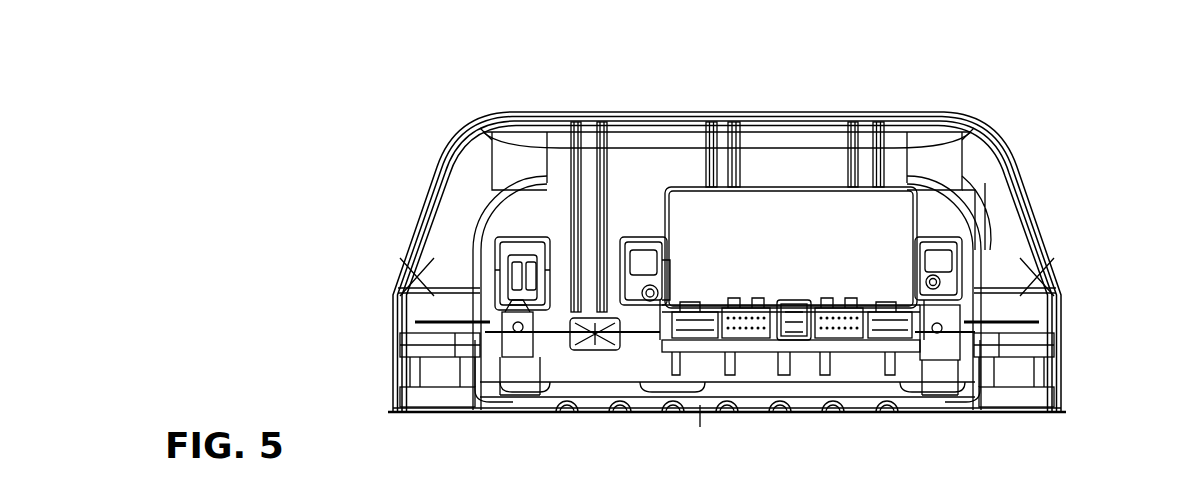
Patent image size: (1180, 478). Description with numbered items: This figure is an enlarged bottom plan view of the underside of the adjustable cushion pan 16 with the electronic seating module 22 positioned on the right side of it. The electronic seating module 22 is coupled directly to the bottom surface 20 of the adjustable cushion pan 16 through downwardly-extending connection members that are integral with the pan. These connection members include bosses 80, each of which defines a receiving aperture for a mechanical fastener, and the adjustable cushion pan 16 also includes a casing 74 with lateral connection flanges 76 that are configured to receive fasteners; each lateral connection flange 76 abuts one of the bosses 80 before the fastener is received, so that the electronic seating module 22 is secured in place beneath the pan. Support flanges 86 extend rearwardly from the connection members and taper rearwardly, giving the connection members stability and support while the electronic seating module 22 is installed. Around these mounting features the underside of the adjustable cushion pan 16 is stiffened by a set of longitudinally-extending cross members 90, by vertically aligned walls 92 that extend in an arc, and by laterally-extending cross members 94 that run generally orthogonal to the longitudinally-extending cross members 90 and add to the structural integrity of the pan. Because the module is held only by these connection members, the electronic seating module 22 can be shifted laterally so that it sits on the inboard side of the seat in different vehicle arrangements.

The adjustable cushion pan 16 is at (805, 165).
The bottom surface 20 is at (633, 183).
The electronic seating module 22 is at (738, 241).
The casing 74 is at (937, 212).
The lateral connection flanges 76 is at (632, 268).
The bosses 80 is at (505, 265).
The support flanges 86 is at (537, 358).
The longitudinally-extending cross members 90 is at (575, 200).
The vertically aligned walls 92 is at (432, 167).
The laterally-extending cross members 94 is at (490, 318).